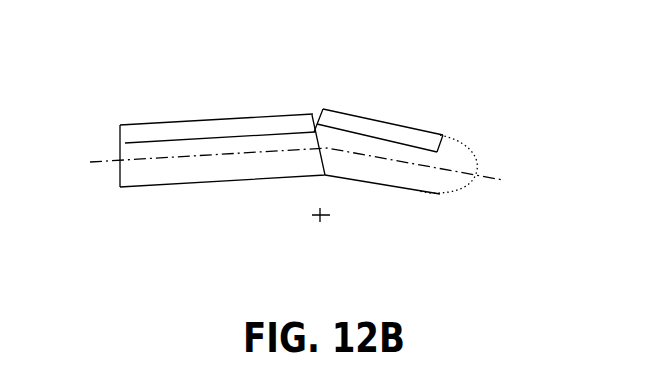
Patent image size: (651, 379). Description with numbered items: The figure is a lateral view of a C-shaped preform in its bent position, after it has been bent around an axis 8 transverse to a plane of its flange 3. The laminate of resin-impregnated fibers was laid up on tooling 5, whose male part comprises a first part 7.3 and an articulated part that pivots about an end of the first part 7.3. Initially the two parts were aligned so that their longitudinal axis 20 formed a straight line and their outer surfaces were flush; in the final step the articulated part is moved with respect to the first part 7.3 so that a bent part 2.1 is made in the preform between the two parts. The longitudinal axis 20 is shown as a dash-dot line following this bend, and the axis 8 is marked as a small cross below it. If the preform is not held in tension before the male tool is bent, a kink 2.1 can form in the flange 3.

The first part 7.3 is at (142, 92).
The bent part 2.1 is at (325, 98).
The flange 3 is at (120, 132).
The longitudinal axis 20 is at (232, 152).
The tooling 5 is at (460, 153).
The axis 8 is at (328, 216).